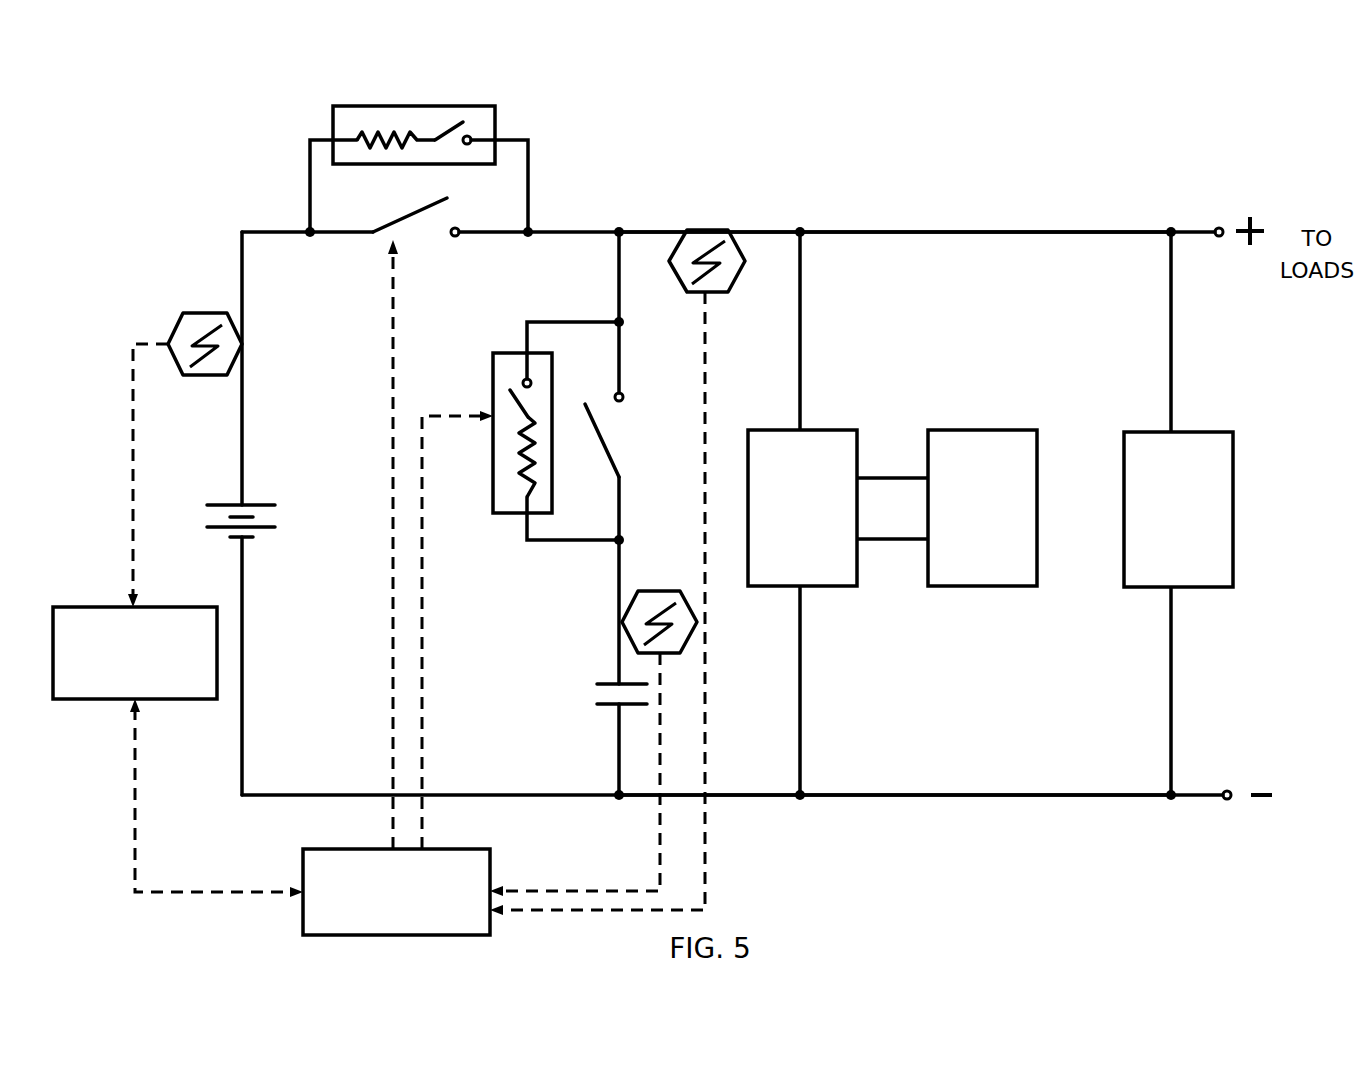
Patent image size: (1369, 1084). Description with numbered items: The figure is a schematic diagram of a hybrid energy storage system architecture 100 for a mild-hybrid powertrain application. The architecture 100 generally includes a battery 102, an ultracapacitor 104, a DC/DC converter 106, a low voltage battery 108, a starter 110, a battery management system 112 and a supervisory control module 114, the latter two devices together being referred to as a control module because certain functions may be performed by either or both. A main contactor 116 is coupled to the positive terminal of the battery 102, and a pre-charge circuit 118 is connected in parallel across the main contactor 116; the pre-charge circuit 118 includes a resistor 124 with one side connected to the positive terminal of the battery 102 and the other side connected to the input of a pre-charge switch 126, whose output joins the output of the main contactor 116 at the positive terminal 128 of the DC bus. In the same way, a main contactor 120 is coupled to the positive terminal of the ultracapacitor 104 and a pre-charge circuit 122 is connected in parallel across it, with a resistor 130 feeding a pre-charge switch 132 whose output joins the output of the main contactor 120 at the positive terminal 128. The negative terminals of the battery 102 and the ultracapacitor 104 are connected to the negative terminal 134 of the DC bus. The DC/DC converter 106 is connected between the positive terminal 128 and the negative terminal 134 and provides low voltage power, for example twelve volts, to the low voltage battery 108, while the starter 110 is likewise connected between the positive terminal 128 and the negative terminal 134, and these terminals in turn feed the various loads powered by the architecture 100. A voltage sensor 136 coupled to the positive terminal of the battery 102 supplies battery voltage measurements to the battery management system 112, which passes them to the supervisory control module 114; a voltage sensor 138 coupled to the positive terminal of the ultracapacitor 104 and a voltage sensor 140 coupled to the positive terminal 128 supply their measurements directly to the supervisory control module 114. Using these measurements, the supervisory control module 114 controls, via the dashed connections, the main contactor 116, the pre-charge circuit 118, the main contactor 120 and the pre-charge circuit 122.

The architecture 100 is at (1120, 158).
The battery 102 is at (257, 495).
The ultracapacitor 104 is at (566, 698).
The DC/DC converter 106 is at (826, 424).
The low voltage battery 108 is at (998, 424).
The starter 110 is at (1202, 426).
The battery management system 112 is at (104, 607).
The supervisory control module 114 is at (303, 917).
The main contactor 116 is at (430, 237).
The pre-charge circuit 118 is at (461, 136).
The main contactor 120 is at (622, 434).
The pre-charge circuit 122 is at (515, 462).
The resistor 124 is at (388, 127).
The pre-charge switch 126 is at (445, 120).
The positive terminal 128 is at (947, 231).
The resistor 130 is at (512, 469).
The pre-charge switch 132 is at (503, 399).
The negative terminal 134 is at (947, 795).
The voltage sensor 136 is at (192, 316).
The voltage sensor 138 is at (660, 591).
The voltage sensor 140 is at (717, 292).